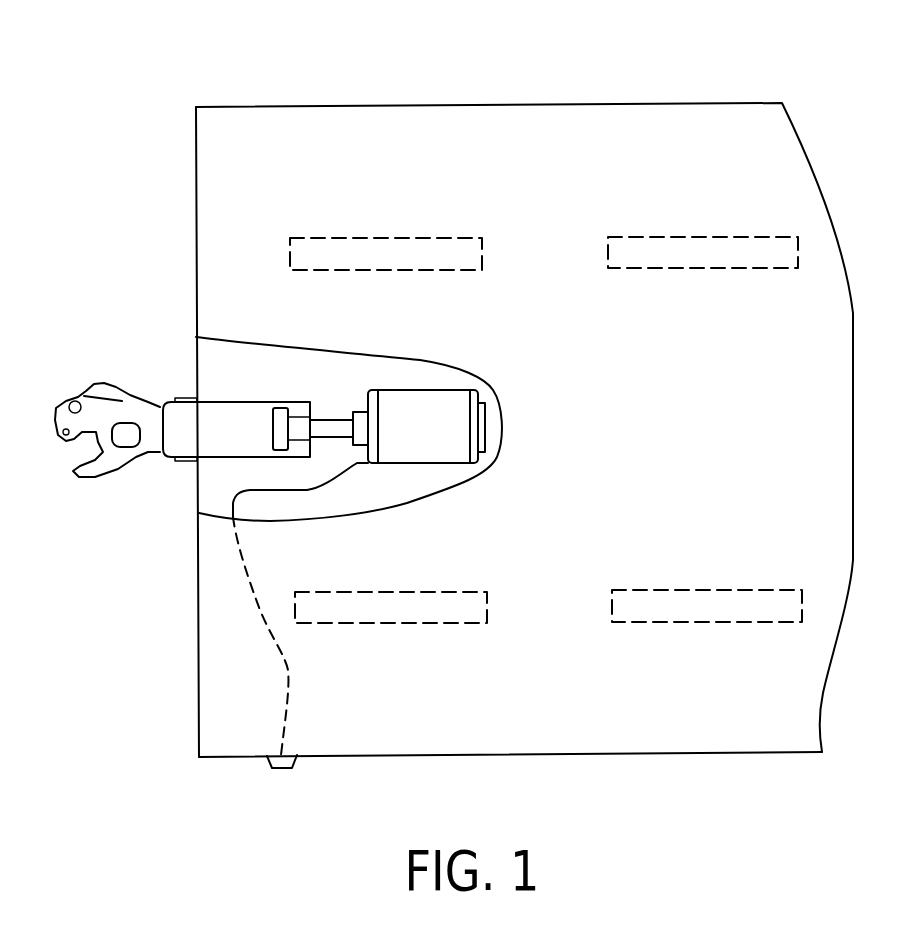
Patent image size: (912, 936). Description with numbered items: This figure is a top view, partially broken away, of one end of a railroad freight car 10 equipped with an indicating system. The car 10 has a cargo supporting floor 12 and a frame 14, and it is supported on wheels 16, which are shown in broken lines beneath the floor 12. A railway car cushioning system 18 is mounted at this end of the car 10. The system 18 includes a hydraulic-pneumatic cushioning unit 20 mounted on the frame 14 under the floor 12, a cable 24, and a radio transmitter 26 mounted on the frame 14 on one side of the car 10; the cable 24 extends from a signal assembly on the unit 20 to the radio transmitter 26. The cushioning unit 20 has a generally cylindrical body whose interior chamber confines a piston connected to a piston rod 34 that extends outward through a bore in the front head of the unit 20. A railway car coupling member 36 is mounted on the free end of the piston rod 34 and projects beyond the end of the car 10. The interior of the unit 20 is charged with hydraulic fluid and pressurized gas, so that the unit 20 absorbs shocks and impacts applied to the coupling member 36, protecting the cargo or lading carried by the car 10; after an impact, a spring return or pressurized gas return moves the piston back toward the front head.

The railroad freight car 10 is at (495, 105).
The cargo supporting floor 12 is at (662, 409).
The frame 14 is at (570, 752).
The wheels 16 is at (608, 270).
The railway car cushioning system 18 is at (289, 423).
The hydraulic-pneumatic cushioning unit 20 is at (420, 452).
The cable 24 is at (248, 566).
The radio transmitter 26 is at (281, 768).
The piston rod 34 is at (328, 418).
The railway car coupling member 36 is at (100, 393).